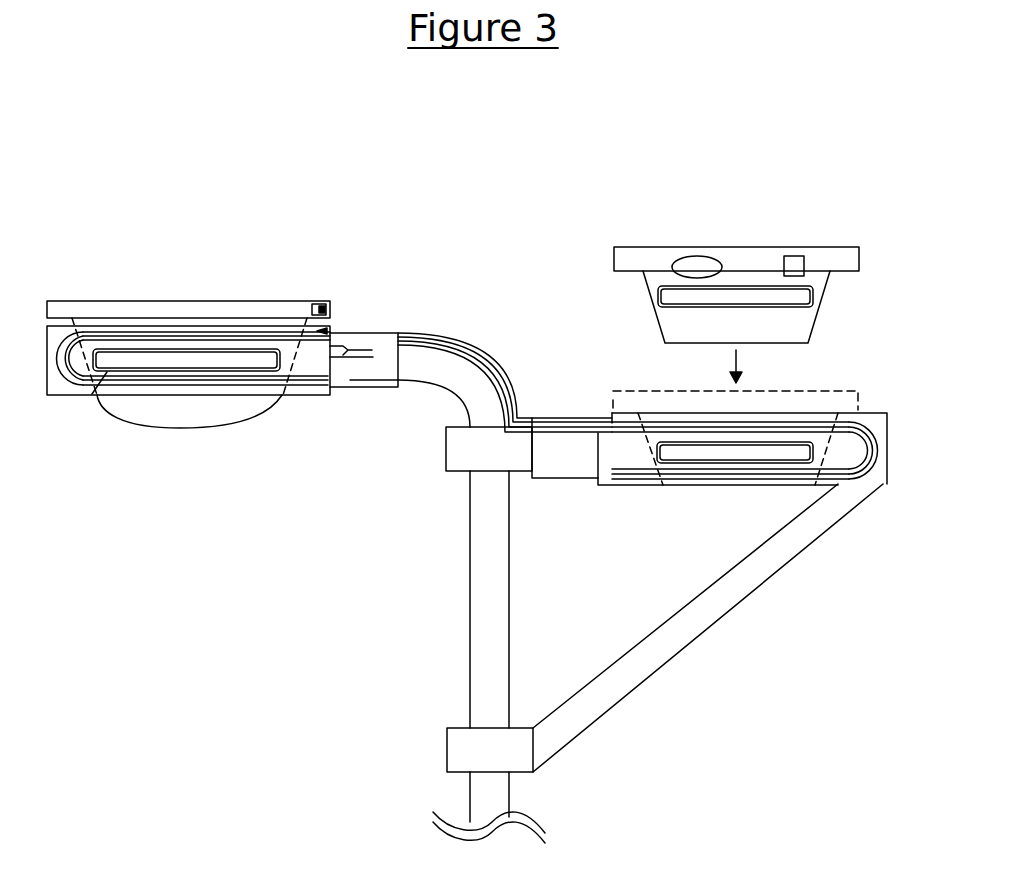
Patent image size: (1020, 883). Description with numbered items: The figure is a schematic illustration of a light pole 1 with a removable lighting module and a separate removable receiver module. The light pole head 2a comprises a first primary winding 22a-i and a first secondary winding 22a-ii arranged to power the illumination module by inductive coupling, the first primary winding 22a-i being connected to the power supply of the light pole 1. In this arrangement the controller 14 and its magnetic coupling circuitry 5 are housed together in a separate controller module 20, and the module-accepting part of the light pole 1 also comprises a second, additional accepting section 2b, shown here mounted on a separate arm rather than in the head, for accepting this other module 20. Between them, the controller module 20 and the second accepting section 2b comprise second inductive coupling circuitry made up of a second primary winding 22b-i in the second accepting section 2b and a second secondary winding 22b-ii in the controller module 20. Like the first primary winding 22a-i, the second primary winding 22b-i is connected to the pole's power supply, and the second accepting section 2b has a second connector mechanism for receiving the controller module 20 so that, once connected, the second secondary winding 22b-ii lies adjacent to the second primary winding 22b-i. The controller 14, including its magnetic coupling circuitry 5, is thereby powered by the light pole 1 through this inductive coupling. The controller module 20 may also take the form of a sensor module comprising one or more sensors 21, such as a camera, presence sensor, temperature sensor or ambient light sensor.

The light pole 1 is at (470, 572).
The light pole head 2a is at (302, 396).
The second accepting section 2b is at (568, 478).
The magnetic coupling circuitry 5 is at (630, 417).
The controller 14 is at (792, 257).
The controller module 20 is at (837, 247).
The sensors 21 is at (694, 257).
The first primary winding 22a-i is at (72, 394).
The first secondary winding 22a-ii is at (98, 395).
The second primary winding 22b-i is at (858, 481).
The second secondary winding 22b-ii is at (797, 462).